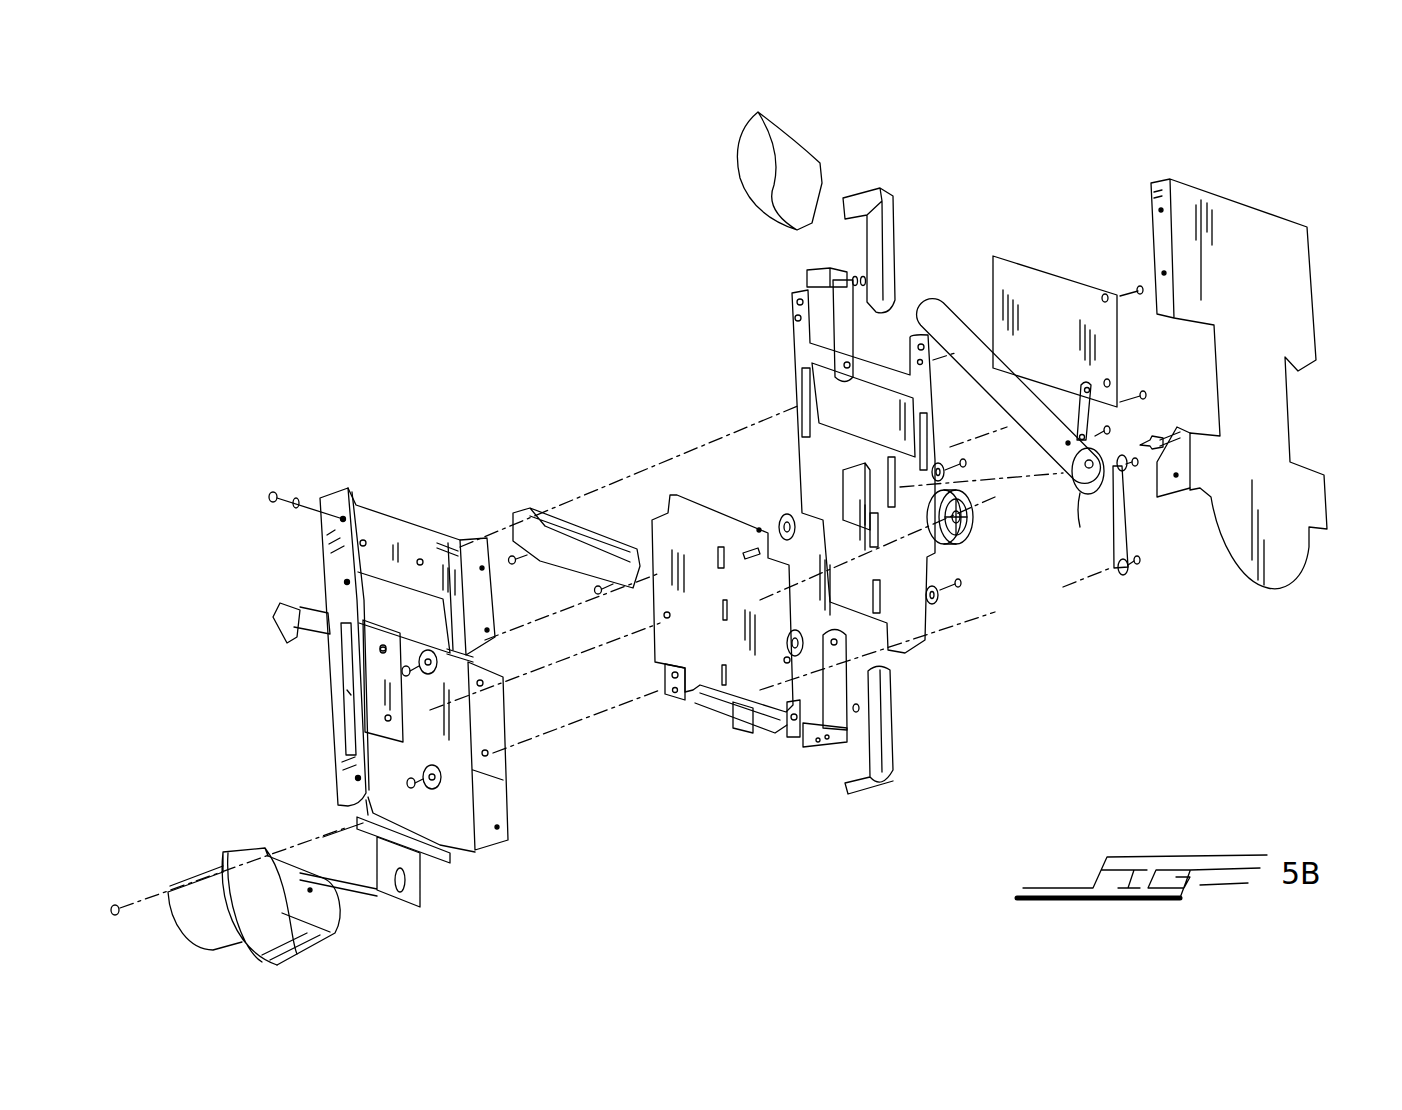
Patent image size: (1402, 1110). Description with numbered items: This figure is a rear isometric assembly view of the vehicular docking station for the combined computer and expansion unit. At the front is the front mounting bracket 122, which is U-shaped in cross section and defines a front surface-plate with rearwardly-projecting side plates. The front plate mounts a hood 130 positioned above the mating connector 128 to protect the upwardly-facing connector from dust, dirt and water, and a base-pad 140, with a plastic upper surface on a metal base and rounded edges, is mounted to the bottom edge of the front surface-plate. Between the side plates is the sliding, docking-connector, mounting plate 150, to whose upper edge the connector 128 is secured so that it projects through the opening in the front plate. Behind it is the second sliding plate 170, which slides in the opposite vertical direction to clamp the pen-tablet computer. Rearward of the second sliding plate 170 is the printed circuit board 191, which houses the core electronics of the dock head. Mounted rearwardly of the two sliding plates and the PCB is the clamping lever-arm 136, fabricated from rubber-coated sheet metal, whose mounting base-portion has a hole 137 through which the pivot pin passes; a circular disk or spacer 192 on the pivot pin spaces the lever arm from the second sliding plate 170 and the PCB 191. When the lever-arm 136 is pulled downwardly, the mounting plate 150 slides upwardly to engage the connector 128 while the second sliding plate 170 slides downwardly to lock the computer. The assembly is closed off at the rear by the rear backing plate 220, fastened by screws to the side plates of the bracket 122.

The front mounting bracket 122 is at (358, 487).
The hood 130 is at (290, 600).
The base-pad 140 is at (249, 846).
The 240-pin mating connector 128 is at (577, 512).
The sliding docking-connector mounting plate 150 is at (700, 518).
The second sliding plate 170 is at (790, 321).
The clamping lever-arm 136 is at (948, 300).
The printed circuit board 191 is at (1085, 300).
The rear backing plate 220 is at (1284, 247).
The hole 137 is at (1081, 503).
The circular disk or spacer 192 is at (966, 548).